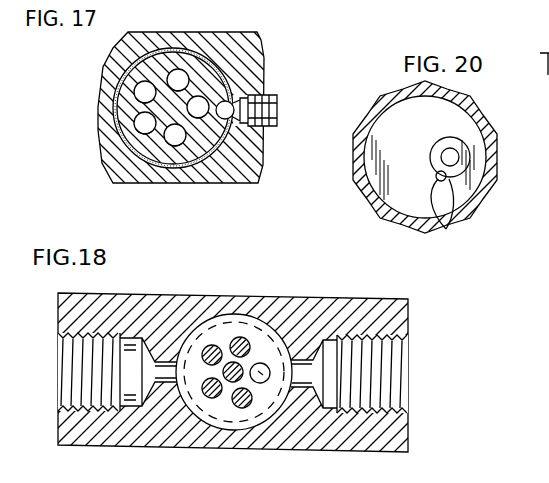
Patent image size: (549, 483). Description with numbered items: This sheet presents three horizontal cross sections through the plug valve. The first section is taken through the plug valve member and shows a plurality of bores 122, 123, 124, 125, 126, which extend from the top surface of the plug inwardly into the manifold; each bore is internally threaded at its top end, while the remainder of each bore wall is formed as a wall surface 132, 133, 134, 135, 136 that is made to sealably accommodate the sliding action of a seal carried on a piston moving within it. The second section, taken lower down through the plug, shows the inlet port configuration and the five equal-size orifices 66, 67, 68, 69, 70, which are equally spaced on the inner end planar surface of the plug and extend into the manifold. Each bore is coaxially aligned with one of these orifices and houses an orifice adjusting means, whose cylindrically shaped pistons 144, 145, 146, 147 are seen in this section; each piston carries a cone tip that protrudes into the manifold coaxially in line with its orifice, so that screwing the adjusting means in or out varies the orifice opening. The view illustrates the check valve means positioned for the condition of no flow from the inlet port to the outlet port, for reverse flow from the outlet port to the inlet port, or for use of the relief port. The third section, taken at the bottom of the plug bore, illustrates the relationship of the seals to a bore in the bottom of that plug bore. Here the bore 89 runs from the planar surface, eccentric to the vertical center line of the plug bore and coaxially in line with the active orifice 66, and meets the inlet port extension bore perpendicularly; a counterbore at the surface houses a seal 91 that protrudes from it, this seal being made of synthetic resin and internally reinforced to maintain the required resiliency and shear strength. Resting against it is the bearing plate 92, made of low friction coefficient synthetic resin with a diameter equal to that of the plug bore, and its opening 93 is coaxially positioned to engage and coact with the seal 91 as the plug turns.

In FIG. 17, the bore 122 is at (247, 77).
In FIG. 17, the bore 123 is at (197, 98).
In FIG. 17, the bore 124 is at (112, 53).
In FIG. 17, the bore 125 is at (142, 118).
In FIG. 17, the bore 126 is at (164, 157).
In FIG. 17, the wall surface 132 is at (201, 101).
In FIG. 17, the wall surface 133 is at (173, 72).
In FIG. 17, the wall surface 134 is at (146, 84).
In FIG. 17, the wall surface 135 is at (136, 124).
In FIG. 17, the wall surface 136 is at (190, 150).
In FIG. 18, the orifice 66 is at (293, 348).
In FIG. 18, the orifice 67 is at (267, 362).
In FIG. 18, the orifice 68 is at (205, 346).
In FIG. 18, the orifice 69 is at (180, 412).
In FIG. 18, the orifice 70 is at (243, 405).
In FIG. 18, the piston 144 is at (242, 338).
In FIG. 18, the piston 145 is at (203, 350).
In FIG. 18, the piston 146 is at (205, 392).
In FIG. 18, the piston 147 is at (252, 405).
In FIG. 20, the bore 89 is at (451, 157).
In FIG. 20, the seal 91 is at (455, 173).
In FIG. 20, the bearing plate 92 is at (407, 148).
In FIG. 20, the opening 93 is at (446, 229).